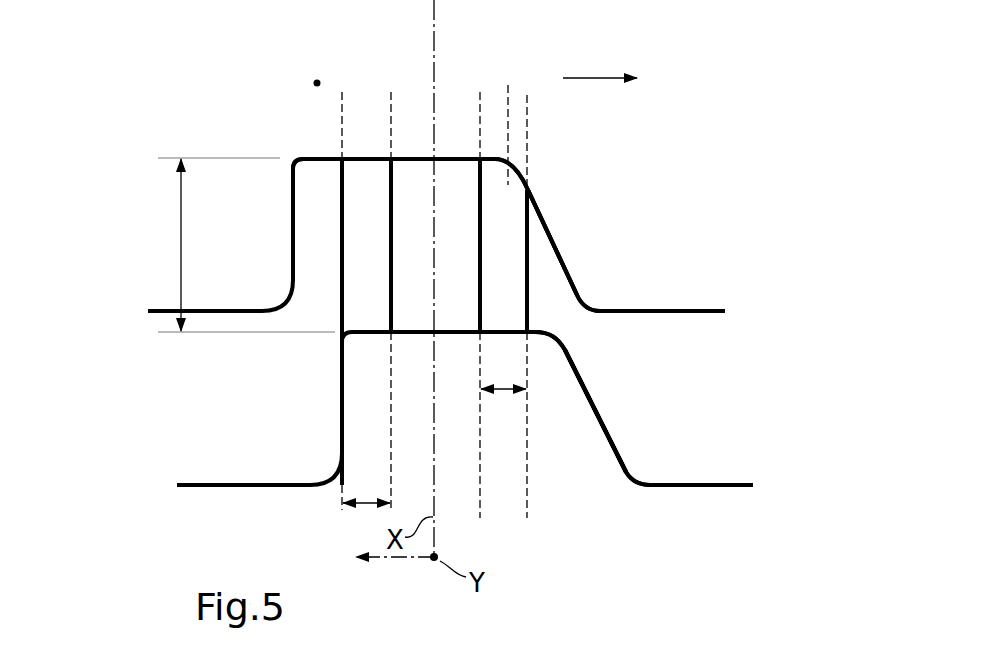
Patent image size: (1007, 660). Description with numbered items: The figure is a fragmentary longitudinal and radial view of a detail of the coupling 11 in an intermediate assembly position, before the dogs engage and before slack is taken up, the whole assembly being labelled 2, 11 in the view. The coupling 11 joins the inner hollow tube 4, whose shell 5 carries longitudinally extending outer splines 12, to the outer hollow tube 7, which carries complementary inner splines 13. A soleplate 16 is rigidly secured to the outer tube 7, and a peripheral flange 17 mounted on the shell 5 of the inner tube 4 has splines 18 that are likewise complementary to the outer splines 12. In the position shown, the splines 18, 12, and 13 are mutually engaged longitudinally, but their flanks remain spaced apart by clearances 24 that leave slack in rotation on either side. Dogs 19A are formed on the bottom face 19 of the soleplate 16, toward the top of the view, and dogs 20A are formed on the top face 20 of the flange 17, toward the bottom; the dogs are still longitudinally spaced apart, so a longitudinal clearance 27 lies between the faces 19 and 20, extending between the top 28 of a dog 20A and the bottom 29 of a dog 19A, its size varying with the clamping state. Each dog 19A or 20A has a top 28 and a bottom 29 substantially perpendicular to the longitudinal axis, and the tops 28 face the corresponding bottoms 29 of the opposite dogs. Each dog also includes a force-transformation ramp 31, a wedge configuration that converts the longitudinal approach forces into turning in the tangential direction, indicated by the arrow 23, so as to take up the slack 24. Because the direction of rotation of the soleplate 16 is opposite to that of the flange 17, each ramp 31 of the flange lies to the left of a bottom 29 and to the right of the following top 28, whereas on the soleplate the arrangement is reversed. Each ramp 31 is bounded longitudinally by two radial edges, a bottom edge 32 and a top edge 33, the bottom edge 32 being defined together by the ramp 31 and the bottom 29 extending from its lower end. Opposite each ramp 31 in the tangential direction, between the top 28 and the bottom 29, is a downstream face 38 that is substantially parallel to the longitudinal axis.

The component 2 is at (641, 472).
The coupling 11 is at (621, 528).
The inner hollow tube 4 is at (644, 291).
The shell 5 is at (629, 339).
The outer hollow tube 7 is at (318, 67).
The soleplate 16 is at (318, 67).
The outer splines 12 is at (448, 165).
The inner splines 13 is at (510, 108).
The peripheral flange 17 is at (713, 495).
The splines 18 is at (525, 518).
The bottom face 19 is at (705, 317).
The dog 19A is at (578, 225).
The top face 20 is at (195, 481).
The dog 20A is at (585, 420).
The pivot arrow 23 is at (585, 78).
The clearance 24 is at (358, 517).
The longitudinal clearance 27 is at (165, 235).
The top 28 is at (368, 322).
The bottom 29 is at (318, 157).
The force-transformation ramp 31 is at (540, 243).
The bottom edge 32 is at (578, 308).
The top edge 33 is at (512, 162).
The downstream face 38 is at (292, 222).